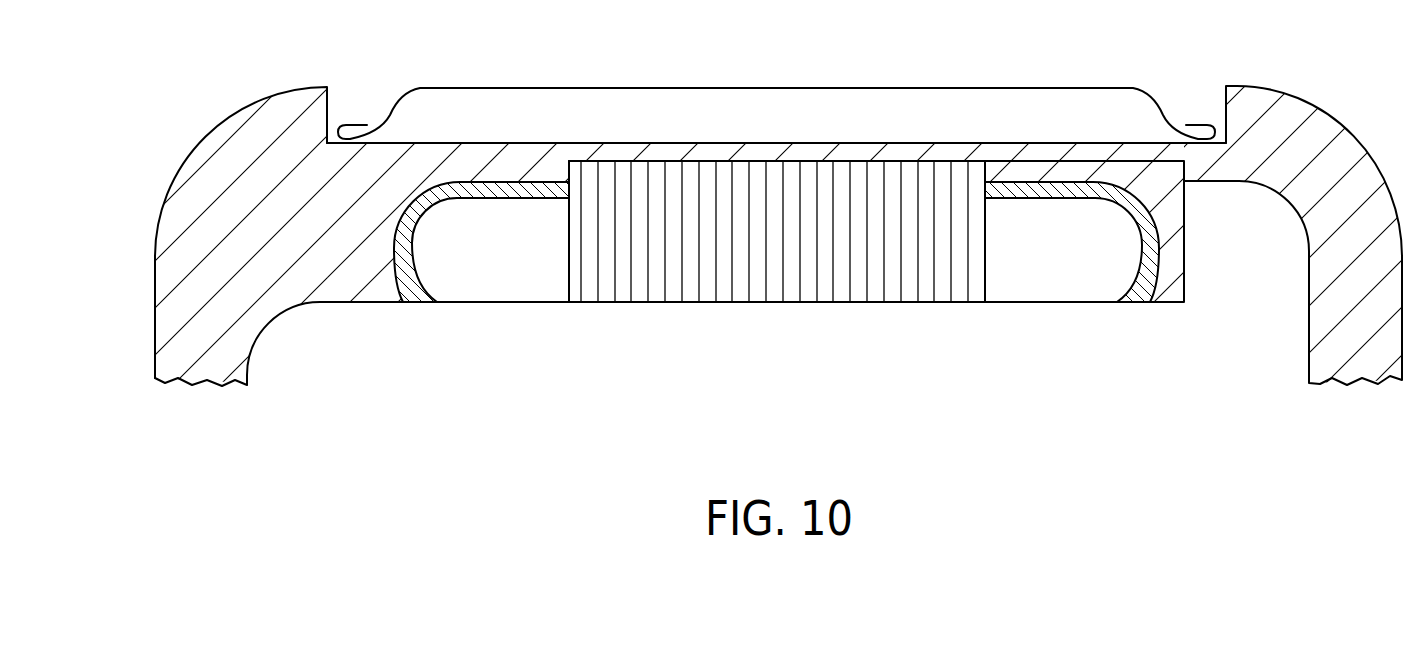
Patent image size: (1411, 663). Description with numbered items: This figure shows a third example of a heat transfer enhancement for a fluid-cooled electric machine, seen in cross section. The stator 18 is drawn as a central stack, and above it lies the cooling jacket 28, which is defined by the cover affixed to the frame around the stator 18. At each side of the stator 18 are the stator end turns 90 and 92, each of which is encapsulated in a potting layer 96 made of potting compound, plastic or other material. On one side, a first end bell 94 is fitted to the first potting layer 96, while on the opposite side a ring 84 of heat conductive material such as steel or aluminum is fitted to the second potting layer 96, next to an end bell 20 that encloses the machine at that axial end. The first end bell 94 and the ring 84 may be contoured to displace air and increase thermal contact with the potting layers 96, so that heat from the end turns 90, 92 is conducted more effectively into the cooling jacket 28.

The stator 18 is at (776, 270).
The end bell 20 is at (1325, 150).
The cooling jacket 28 is at (764, 88).
The ring 84 is at (1170, 233).
The stator end turn 90 is at (507, 268).
The stator end turn 92 is at (1044, 268).
The first end bell 94 is at (197, 338).
The potting layer 96 is at (400, 277).